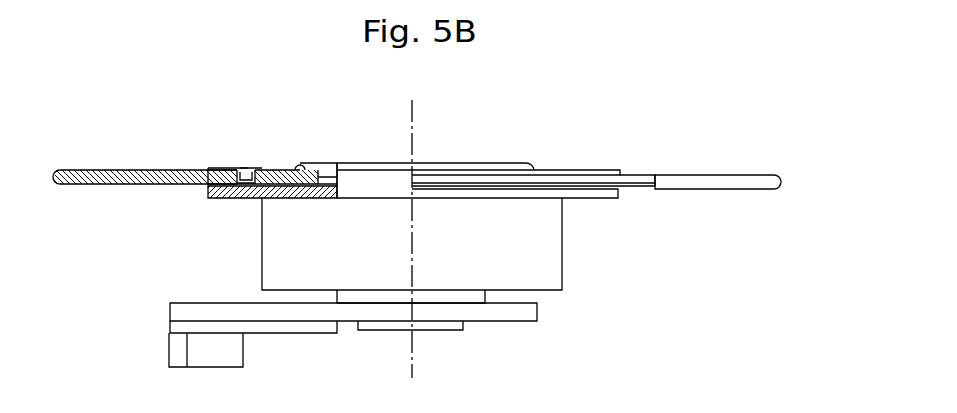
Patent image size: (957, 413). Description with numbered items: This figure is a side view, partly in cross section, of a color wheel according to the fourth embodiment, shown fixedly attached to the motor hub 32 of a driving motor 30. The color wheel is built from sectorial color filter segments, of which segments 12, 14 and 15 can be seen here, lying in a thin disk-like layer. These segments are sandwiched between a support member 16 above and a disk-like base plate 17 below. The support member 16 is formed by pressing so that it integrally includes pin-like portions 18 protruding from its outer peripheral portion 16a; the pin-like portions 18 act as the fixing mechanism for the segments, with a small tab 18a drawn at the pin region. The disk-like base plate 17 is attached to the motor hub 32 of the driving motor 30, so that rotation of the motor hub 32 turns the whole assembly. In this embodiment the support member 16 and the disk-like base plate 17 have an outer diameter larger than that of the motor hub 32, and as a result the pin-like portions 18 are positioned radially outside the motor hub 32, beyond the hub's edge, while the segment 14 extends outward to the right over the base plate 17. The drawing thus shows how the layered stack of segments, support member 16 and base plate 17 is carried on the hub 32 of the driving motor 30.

The sectorial color filter segment 12 is at (80, 168).
The outer peripheral portion 16a is at (220, 168).
The clamp tab 18a is at (243, 165).
The pin-like portion 18 is at (260, 165).
The support member 16 is at (582, 165).
The sectorial color filter segment 15 is at (640, 172).
The sectorial color filter segment 14 is at (743, 174).
The motor hub 32 is at (465, 215).
The disk-like base plate 17 is at (606, 198).
The driving motor 30 is at (419, 202).